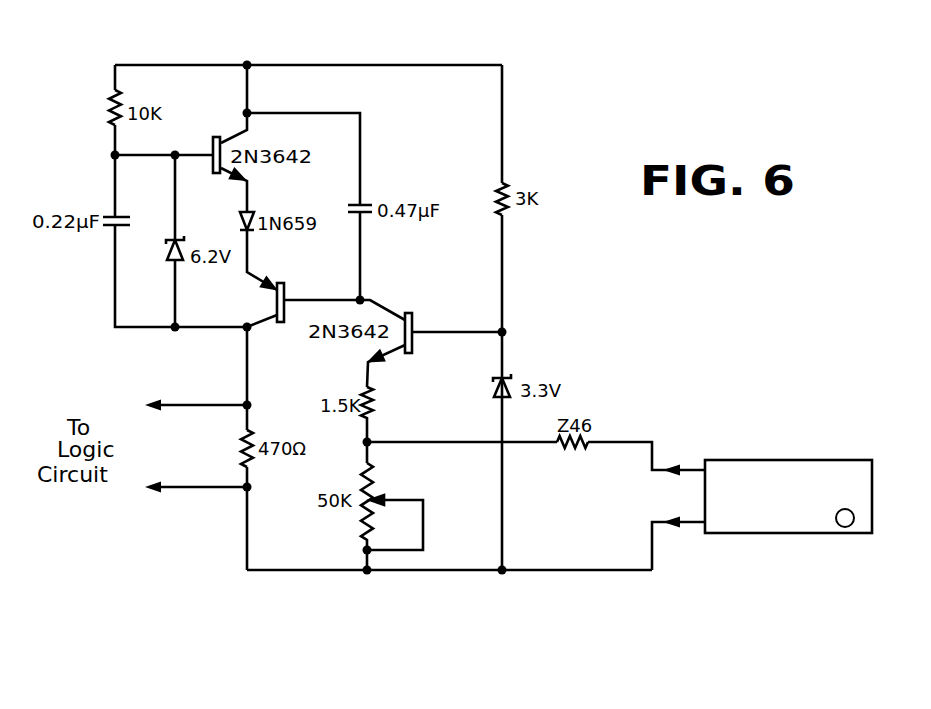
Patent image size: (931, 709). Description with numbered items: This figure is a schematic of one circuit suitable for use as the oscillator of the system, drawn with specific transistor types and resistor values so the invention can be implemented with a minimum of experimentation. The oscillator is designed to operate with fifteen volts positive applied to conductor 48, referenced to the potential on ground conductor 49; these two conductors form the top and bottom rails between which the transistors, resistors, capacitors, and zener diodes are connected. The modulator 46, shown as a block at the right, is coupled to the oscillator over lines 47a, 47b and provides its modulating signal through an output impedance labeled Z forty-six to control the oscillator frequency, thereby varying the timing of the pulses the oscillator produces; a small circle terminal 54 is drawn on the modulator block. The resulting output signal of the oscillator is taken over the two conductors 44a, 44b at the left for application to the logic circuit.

The conductor 48 is at (318, 63).
The ground conductor 49 is at (310, 572).
The conductor 44a is at (193, 404).
The conductor 44b is at (190, 489).
The line 47a is at (655, 461).
The line 47b is at (655, 533).
The modulator circuit 46 is at (788, 483).
The modulator terminal 54 is at (842, 527).